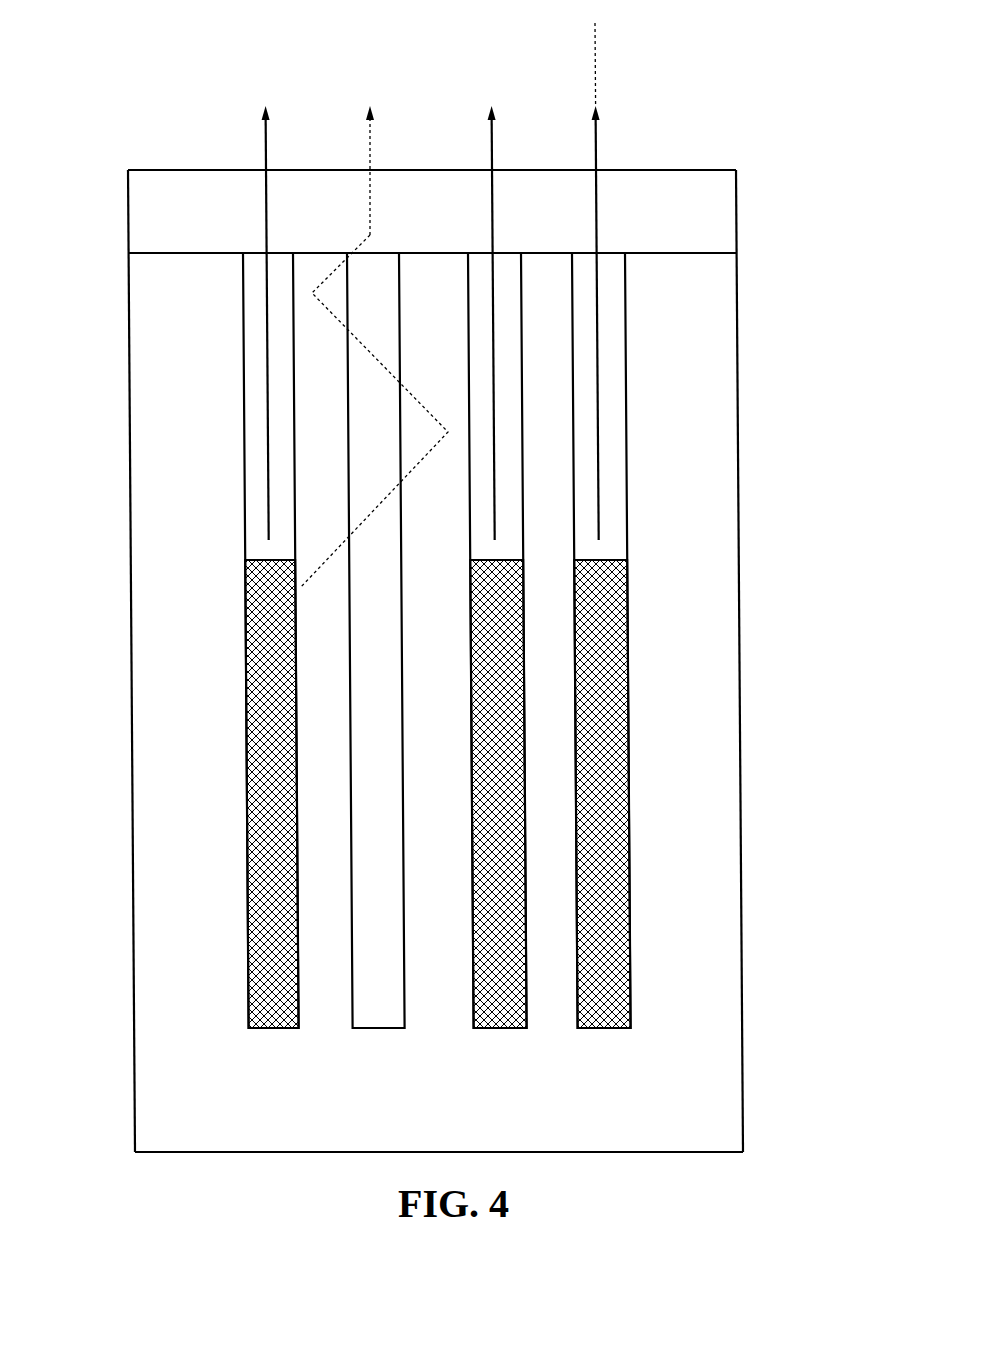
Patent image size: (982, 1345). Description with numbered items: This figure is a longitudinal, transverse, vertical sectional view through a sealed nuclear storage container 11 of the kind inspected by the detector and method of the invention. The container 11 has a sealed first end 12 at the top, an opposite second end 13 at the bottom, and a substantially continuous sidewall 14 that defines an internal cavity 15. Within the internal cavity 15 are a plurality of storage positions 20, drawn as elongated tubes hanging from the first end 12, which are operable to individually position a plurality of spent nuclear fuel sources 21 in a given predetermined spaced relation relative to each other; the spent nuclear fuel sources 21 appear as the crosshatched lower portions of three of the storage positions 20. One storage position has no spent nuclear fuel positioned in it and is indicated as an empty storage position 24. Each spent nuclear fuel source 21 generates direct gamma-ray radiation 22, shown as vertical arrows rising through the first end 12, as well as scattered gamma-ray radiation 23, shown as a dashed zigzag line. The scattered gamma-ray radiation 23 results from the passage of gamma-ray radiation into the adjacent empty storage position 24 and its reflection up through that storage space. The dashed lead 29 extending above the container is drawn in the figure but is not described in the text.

The sealed nuclear storage container 11 is at (452, 632).
The sealed first end 12 is at (740, 184).
The second end 13 is at (747, 1122).
The sidewall 14 is at (744, 776).
The internal cavity 15 is at (188, 447).
The storage positions 20 is at (375, 279).
The spent nuclear fuel sources 21 is at (245, 894).
The direct gamma-ray radiation 22 is at (258, 213).
The scattered gamma-ray radiation 23 is at (368, 152).
The empty storage positions 24 is at (380, 668).
The lead extension 29 is at (595, 60).